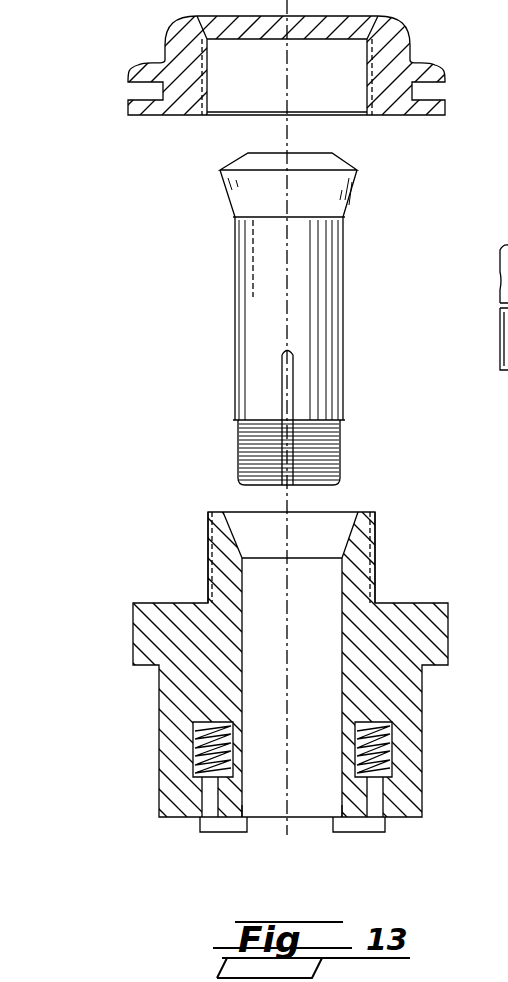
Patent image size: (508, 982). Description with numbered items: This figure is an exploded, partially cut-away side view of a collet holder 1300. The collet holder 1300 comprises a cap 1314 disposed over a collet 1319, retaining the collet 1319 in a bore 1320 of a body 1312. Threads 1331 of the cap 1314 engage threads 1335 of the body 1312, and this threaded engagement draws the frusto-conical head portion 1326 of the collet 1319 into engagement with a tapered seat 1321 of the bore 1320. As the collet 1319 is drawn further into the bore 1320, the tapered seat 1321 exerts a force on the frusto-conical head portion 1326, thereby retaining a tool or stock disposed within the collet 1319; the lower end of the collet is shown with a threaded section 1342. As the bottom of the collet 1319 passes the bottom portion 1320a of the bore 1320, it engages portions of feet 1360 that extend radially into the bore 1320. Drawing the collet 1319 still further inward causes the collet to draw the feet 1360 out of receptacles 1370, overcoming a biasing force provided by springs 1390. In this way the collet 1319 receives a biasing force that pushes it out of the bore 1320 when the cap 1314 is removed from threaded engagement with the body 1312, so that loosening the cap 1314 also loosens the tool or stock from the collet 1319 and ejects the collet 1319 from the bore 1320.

The collet holder 1300 is at (108, 343).
The cap 1314 is at (140, 45).
The threads of cap 1331 is at (191, 129).
The collet 1319 is at (288, 319).
The frusto-conical head portion 1326 is at (348, 190).
The threaded portion 1342 is at (347, 460).
The bore 1320 is at (243, 555).
The tapered seat 1321 is at (360, 513).
The threads of body 1335 is at (198, 570).
The body 1312 is at (254, 672).
The receptacles 1370 is at (200, 755).
The springs 1390 is at (205, 777).
The feet 1360 is at (202, 832).
The bottom portion of bore 1320a is at (243, 808).